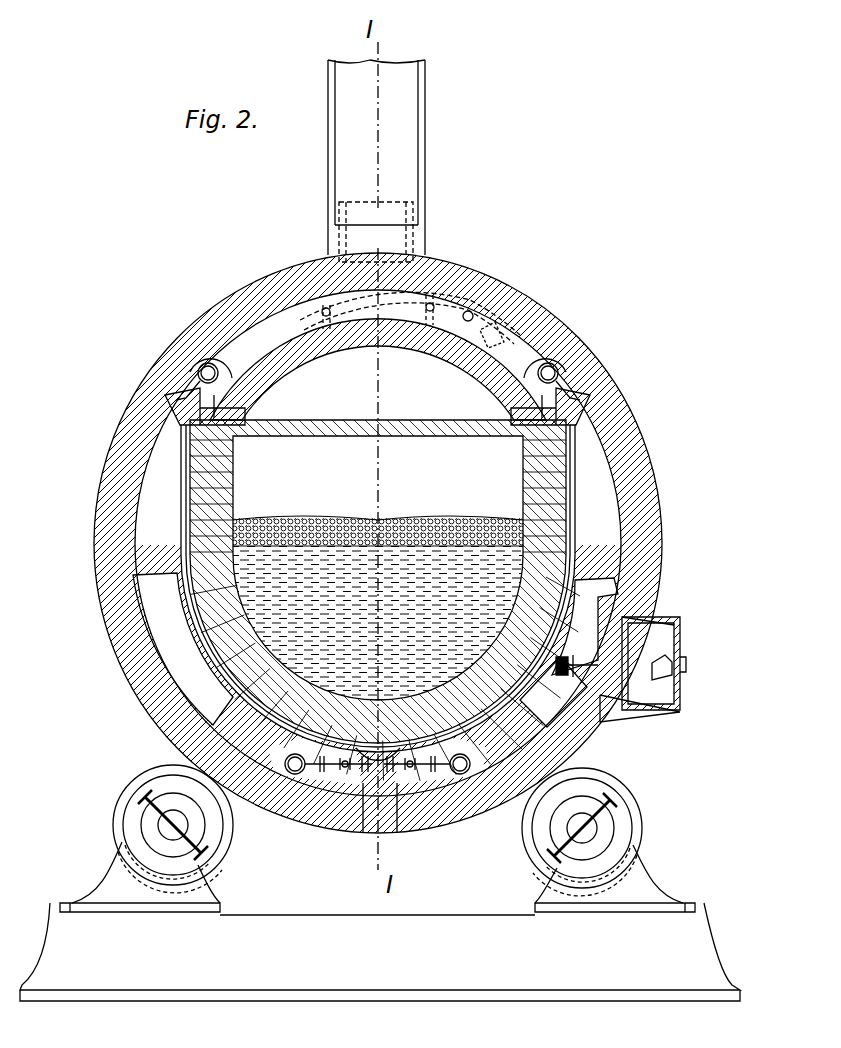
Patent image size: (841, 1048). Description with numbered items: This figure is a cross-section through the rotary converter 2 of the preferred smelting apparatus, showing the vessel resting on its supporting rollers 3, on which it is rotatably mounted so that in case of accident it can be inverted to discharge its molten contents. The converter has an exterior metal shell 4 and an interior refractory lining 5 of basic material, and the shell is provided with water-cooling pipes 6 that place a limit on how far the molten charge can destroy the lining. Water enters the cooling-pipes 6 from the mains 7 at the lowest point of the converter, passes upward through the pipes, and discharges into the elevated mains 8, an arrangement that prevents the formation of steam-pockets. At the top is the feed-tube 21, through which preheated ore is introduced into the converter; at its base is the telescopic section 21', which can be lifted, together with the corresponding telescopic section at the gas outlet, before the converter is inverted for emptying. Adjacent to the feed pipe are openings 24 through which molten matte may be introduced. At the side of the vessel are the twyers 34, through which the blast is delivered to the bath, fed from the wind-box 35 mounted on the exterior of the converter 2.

The converter 2 is at (378, 391).
The rollers 3 is at (232, 826).
The exterior metal shell 4 is at (377, 671).
The interior refractory lining 5 is at (520, 462).
The water-cooling pipes 6 is at (570, 465).
The mains 7 is at (295, 776).
The elevated mains 8 is at (218, 370).
The feed-tube 21 is at (376, 157).
The telescopic section 21' is at (376, 232).
The openings 24 is at (490, 338).
The twyers 34 is at (553, 692).
The wind-box 35 is at (643, 669).